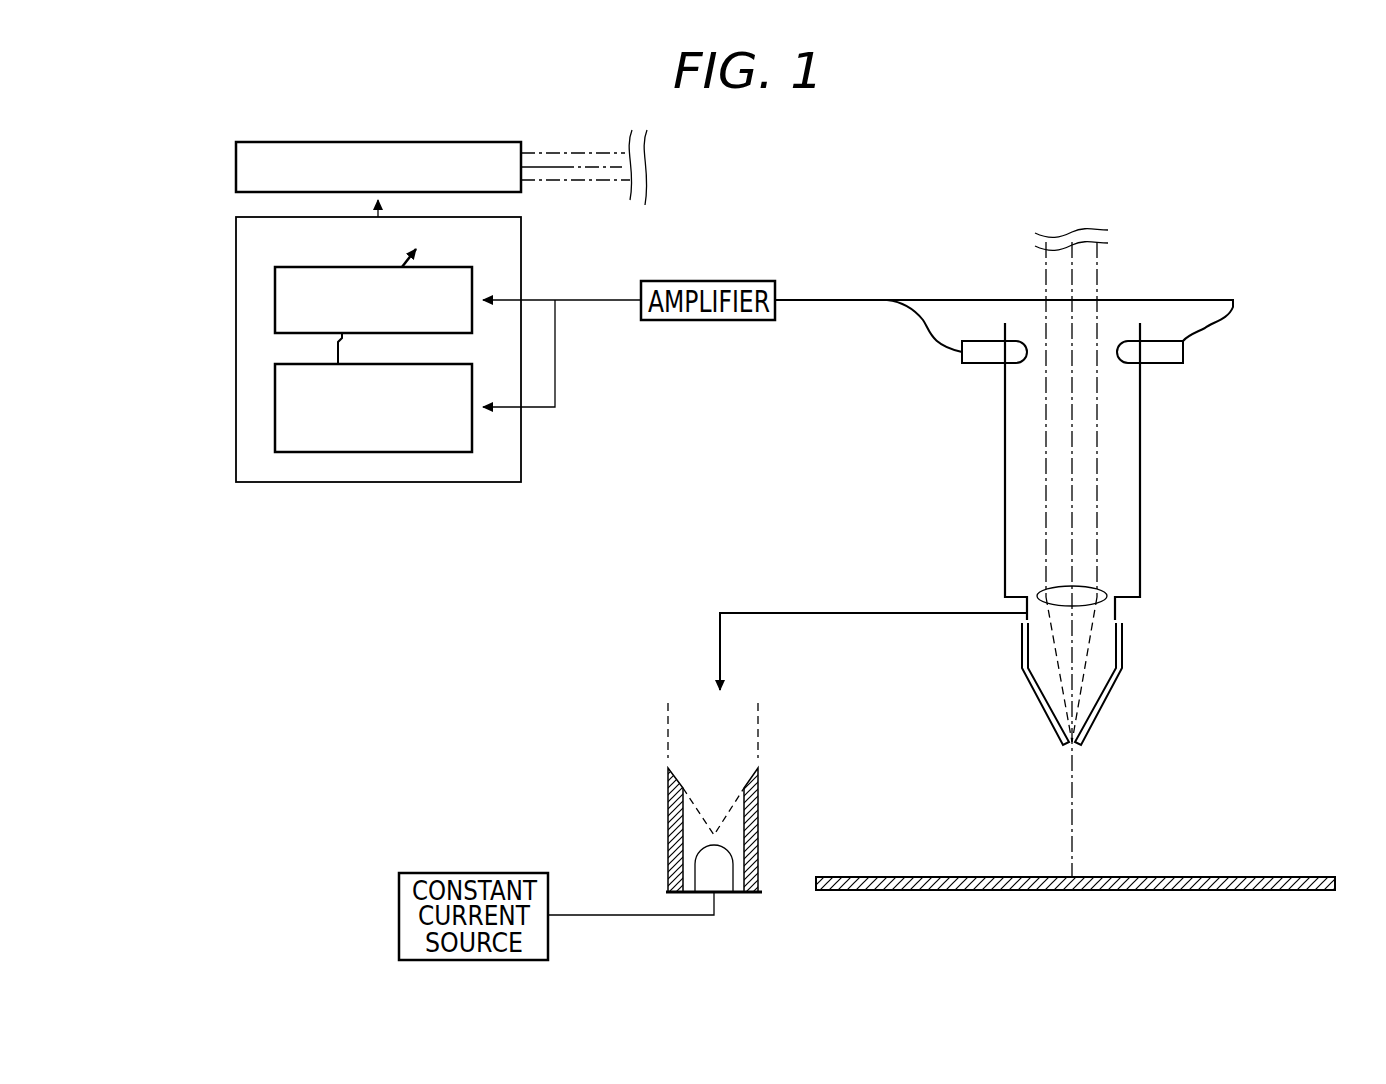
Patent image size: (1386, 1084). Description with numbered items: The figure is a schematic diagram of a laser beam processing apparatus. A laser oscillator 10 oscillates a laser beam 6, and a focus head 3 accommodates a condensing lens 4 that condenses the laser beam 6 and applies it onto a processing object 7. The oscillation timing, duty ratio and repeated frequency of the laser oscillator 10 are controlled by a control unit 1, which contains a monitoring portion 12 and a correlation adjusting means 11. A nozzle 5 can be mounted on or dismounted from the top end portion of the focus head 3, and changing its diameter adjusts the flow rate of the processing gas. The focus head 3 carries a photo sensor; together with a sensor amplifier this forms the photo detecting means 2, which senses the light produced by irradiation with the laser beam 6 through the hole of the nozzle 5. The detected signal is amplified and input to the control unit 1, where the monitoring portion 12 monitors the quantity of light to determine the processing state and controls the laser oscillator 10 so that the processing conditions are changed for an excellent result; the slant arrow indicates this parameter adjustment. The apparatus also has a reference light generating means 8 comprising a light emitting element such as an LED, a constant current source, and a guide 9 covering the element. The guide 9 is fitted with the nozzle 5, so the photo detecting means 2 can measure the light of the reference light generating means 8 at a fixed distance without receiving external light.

The control unit 1 is at (318, 484).
The photo detecting means 2 is at (1158, 352).
The focus head 3 is at (1005, 488).
The condensing lens 4 is at (1052, 597).
The nozzle 5 is at (1122, 650).
The laser beam 6 is at (555, 168).
The processing object 7 is at (953, 877).
The reference light generating means 8 is at (655, 809).
The guide 9 is at (668, 795).
The laser oscillator 10 is at (235, 158).
The correlation adjusting means 11 is at (275, 408).
The monitoring portion 12 is at (275, 315).